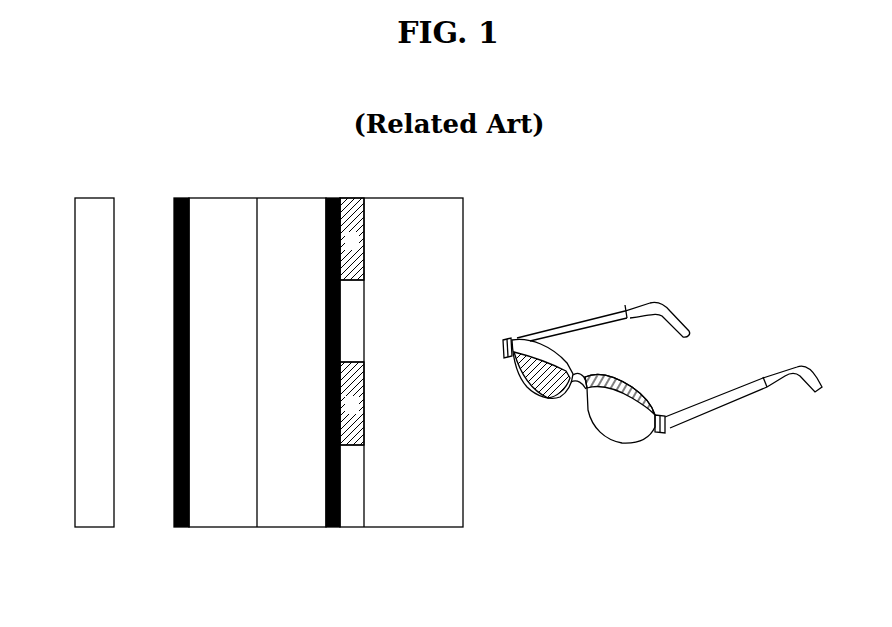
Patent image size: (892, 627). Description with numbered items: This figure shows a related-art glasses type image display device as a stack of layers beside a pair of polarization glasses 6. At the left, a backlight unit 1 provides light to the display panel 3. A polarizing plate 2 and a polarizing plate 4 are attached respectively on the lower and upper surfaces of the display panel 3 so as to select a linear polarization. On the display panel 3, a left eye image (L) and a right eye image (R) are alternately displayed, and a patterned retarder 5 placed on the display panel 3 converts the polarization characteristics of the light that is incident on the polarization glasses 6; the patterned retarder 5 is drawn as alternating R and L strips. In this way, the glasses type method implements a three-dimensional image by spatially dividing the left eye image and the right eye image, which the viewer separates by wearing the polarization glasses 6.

The backlight unit 1 is at (95, 527).
The polarizing plate 2 is at (182, 527).
The display panel 3 is at (326, 547).
The polarizing plate 4 is at (333, 527).
The patterned retarder 5 is at (463, 547).
The polarization glasses 6 is at (590, 322).